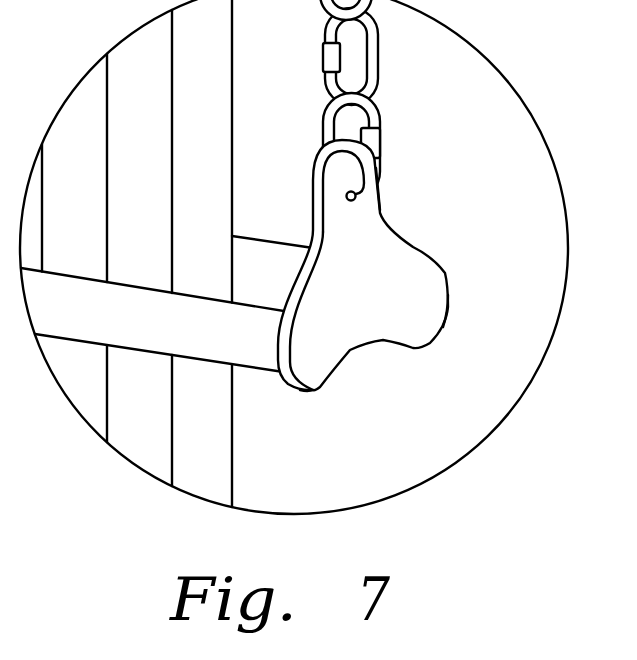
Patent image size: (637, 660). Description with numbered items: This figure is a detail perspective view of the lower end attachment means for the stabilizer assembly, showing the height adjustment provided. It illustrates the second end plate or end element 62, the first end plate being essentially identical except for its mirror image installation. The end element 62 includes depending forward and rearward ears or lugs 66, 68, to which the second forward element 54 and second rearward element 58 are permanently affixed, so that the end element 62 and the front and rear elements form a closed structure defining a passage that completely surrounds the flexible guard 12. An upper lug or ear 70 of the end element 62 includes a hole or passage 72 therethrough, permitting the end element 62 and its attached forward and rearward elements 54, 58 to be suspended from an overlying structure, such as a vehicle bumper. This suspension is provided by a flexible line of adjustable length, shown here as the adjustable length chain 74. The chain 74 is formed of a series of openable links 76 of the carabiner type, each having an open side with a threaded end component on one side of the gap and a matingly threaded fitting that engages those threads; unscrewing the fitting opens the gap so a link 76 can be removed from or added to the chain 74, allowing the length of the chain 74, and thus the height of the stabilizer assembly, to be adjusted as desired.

The guard 12 is at (158, 162).
The second forward element 54 is at (280, 284).
The second rearward element 58 is at (163, 335).
The second end element 62 is at (390, 300).
The forward lug 66 is at (438, 328).
The rearward lug 68 is at (310, 393).
The upper lug 70 is at (383, 189).
The hole 72 is at (346, 199).
The adjustable length chain 74 is at (410, 91).
The openable link 76 is at (323, 78).